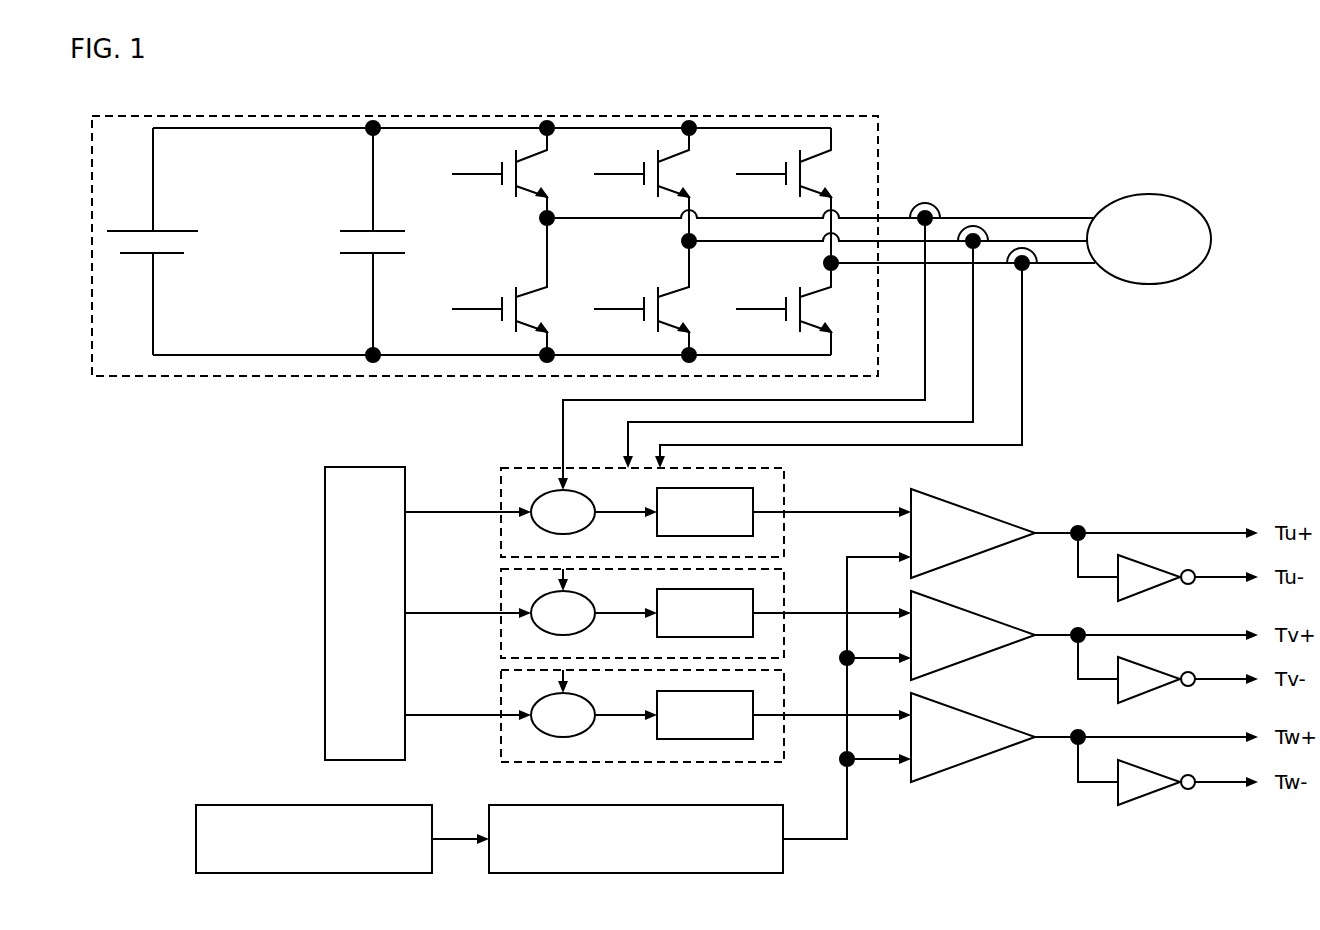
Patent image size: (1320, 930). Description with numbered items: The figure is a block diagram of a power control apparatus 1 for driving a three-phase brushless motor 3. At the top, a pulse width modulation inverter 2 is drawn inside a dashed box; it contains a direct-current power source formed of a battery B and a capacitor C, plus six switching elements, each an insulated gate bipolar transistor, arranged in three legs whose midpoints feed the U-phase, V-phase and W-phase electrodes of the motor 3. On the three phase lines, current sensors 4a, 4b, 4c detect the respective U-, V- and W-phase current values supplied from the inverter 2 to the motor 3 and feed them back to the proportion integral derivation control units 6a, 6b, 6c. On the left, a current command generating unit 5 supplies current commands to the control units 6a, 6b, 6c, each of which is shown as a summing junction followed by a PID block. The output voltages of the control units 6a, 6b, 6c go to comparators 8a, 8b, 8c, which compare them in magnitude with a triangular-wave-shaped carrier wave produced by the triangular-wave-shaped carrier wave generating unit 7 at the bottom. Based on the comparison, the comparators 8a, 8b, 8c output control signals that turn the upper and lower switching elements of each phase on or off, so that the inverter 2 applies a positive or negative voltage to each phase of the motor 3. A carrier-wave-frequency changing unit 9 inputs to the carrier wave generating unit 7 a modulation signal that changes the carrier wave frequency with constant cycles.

The power control apparatus 1 is at (1143, 80).
The pulse width modulation (PWM) inverter 2 is at (517, 116).
The three-phase brushless motor 3 is at (1210, 232).
The current sensor 4a is at (925, 214).
The current sensor 4b is at (973, 238).
The current sensor 4c is at (1022, 260).
The current command generating unit 5 is at (325, 488).
The proportion integral derivation (PID) control unit 6a is at (784, 490).
The proportion integral derivation (PID) control unit 6b is at (784, 592).
The proportion integral derivation (PID) control unit 6c is at (784, 694).
The triangular-wave-shaped carrier wave generating unit 7 is at (660, 873).
The comparator 8a is at (982, 512).
The comparator 8b is at (982, 614).
The comparator 8c is at (982, 716).
The carrier-wave-frequency changing unit 9 is at (305, 873).
The battery B is at (174, 215).
The capacitor C is at (348, 268).